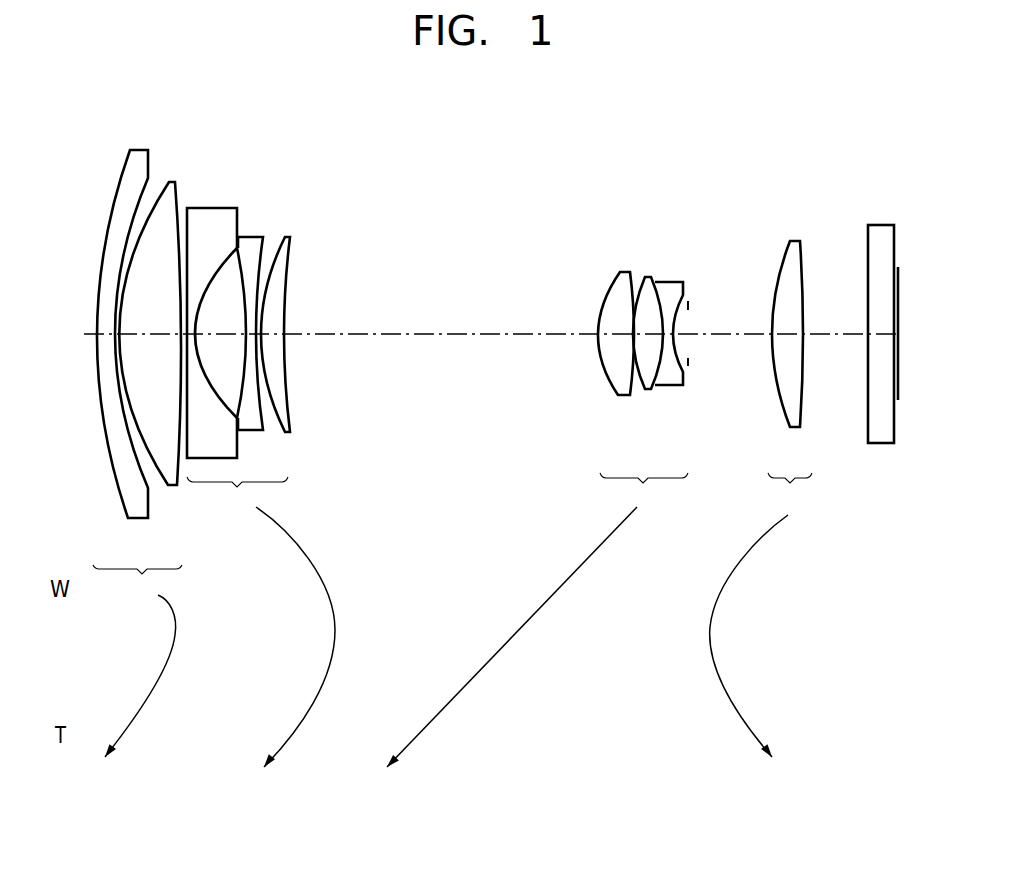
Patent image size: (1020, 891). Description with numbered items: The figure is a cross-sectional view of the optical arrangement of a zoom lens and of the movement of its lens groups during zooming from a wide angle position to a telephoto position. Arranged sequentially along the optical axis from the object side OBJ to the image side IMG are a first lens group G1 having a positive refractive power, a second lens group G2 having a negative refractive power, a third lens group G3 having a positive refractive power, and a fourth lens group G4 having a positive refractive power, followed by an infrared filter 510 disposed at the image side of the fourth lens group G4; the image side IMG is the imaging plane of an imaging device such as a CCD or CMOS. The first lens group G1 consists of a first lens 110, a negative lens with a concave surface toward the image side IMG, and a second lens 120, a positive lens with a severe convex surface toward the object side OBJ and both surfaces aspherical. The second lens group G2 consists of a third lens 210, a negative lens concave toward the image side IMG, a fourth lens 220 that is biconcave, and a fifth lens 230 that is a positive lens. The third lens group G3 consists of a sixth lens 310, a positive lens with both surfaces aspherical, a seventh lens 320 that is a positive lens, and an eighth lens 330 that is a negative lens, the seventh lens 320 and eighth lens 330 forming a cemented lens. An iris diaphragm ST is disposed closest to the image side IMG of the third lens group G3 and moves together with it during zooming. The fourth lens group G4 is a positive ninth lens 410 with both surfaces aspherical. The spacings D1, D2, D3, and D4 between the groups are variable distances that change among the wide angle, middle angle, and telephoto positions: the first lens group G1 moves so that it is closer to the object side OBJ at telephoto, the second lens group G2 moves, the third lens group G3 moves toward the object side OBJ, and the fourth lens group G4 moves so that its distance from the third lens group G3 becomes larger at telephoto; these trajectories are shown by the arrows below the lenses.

The first lens 110 is at (140, 154).
The second lens 120 is at (171, 182).
The third lens 210 is at (213, 211).
The fourth lens 220 is at (255, 241).
The fifth lens 230 is at (290, 239).
The sixth lens 310 is at (620, 274).
The seventh lens 320 is at (648, 277).
The eighth lens 330 is at (682, 282).
The ninth lens 410 is at (795, 240).
The infrared filter 510 is at (877, 224).
The iris diaphragm ST is at (692, 301).
The image side IMG is at (900, 272).
The object side OBJ is at (62, 335).
The variable distance D1 is at (162, 447).
The variable distance D2 is at (462, 336).
The variable distance D3 is at (731, 338).
The variable distance D4 is at (838, 337).
The first lens group G1 is at (152, 661).
The second lens group G2 is at (261, 622).
The third lens group G3 is at (538, 620).
The fourth lens group G4 is at (774, 615).